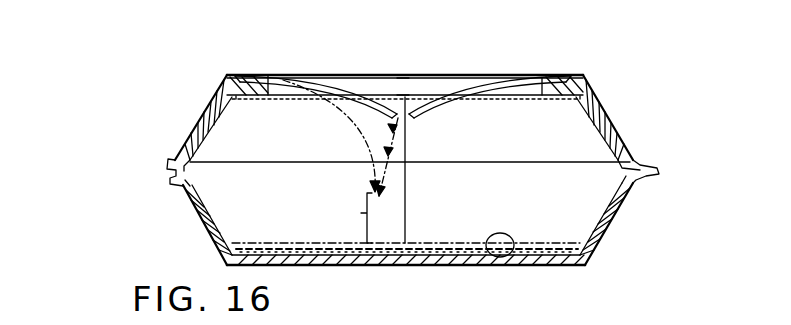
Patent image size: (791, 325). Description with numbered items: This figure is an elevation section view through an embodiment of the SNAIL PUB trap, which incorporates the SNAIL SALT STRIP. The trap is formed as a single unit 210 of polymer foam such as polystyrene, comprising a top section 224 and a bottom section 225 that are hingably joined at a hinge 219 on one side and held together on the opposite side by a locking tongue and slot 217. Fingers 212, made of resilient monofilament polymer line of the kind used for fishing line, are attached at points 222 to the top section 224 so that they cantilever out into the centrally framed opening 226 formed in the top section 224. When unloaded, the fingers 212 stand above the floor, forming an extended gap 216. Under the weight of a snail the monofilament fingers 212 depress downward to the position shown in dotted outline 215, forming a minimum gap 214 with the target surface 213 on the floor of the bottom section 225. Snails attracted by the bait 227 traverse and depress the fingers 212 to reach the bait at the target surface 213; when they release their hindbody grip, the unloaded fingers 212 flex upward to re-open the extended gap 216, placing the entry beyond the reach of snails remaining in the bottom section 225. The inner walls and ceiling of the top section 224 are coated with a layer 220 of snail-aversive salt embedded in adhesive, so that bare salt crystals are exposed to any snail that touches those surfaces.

The unit 210 is at (195, 116).
The fingers 212 is at (320, 77).
The target surface 213 is at (381, 267).
The minimum gap 214 is at (361, 213).
The dotted outline 215 is at (355, 130).
The extended gap 216 is at (405, 193).
The locking tongue and slot 217 is at (645, 177).
The hinge 219 is at (172, 170).
The layer 220 is at (563, 100).
The attachment points 222 is at (583, 78).
The top section 224 is at (616, 135).
The bottom section 225 is at (603, 233).
The centrally framed opening 226 is at (411, 84).
The bait 227 is at (502, 257).